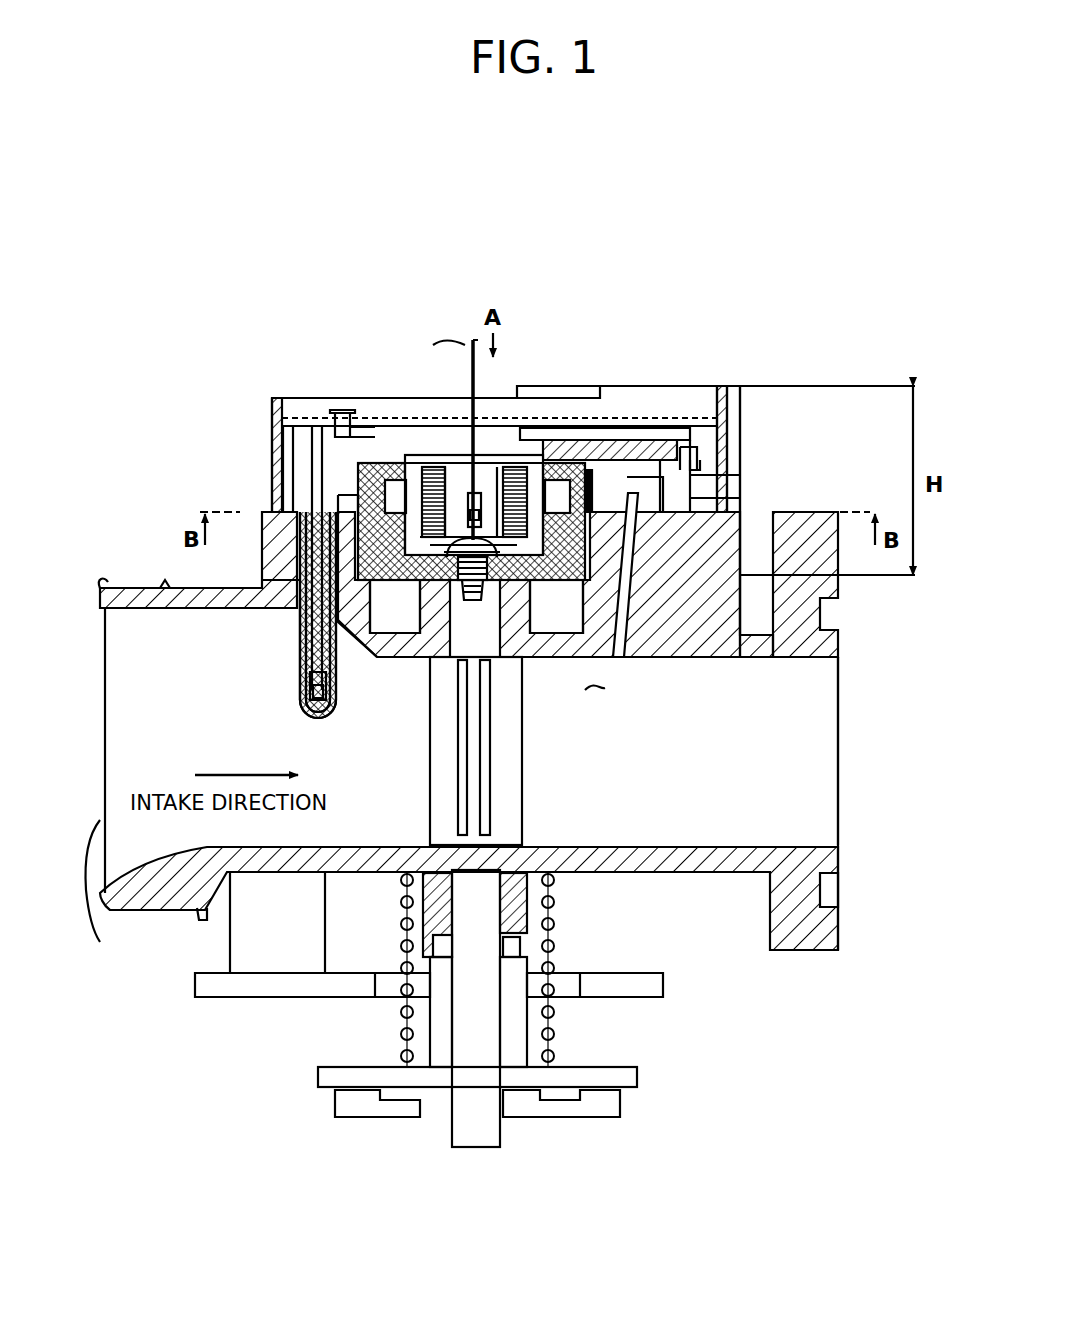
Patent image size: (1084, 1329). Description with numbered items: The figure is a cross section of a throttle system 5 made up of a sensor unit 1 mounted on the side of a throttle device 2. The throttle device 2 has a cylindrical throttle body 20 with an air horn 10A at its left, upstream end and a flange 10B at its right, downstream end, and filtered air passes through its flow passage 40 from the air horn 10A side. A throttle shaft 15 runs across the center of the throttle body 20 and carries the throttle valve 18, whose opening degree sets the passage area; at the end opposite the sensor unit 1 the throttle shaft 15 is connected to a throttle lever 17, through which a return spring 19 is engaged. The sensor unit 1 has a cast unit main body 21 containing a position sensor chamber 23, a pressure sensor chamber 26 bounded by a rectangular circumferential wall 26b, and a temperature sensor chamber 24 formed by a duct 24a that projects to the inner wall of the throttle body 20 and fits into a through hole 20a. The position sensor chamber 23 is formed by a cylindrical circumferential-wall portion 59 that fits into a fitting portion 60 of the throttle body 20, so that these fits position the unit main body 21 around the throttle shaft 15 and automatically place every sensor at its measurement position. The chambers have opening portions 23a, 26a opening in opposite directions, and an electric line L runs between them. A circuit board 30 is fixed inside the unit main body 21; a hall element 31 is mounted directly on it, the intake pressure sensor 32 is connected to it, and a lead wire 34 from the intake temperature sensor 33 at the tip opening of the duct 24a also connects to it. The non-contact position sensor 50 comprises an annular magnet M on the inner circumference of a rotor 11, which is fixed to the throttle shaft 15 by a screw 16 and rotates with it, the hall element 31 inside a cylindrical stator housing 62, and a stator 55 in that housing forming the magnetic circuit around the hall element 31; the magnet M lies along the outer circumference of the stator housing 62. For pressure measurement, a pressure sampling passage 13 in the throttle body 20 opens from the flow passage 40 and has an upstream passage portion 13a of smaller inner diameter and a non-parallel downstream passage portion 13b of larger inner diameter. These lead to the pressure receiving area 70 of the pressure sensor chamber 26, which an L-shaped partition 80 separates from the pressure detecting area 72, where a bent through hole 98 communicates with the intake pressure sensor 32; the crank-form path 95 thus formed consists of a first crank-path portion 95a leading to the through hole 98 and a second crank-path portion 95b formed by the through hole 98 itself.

The sensor unit 1 is at (690, 372).
The throttle device 2 is at (850, 512).
The intake air control device 5 is at (528, 263).
The air horn 10A is at (96, 935).
The flange 10B is at (838, 800).
The rotor 11 is at (395, 606).
The pressure sampling passage 13 is at (897, 702).
The upstream passage portion 13a is at (600, 657).
The downstream passage portion 13b is at (655, 657).
The throttle shaft 15 is at (483, 902).
The screw 16 is at (440, 662).
The throttle lever 17 is at (595, 1110).
The throttle valve 18 is at (482, 790).
The return spring 19 is at (400, 1012).
The throttle body 20 is at (686, 870).
The through hole 20a is at (295, 585).
The unit main body 21 is at (742, 440).
The position sensor chamber 23 is at (362, 482).
The opening portion 23a is at (378, 660).
The temperature sensor chamber 24 is at (298, 690).
The duct 24a is at (298, 622).
The pressure sensor chamber 26 is at (700, 395).
The opening portion 26a is at (585, 395).
The circumferential wall 26b is at (730, 402).
The circuit board 30 is at (465, 472).
The hall element 31 is at (440, 470).
The intake pressure sensor 32 is at (672, 440).
The intake temperature sensor 33 is at (312, 698).
The lead wire 34 is at (286, 428).
The flow passage 40 is at (688, 783).
The non-contact-type position sensor 50 is at (375, 478).
The stator 55 is at (532, 437).
The circumferential-wall portion 59 is at (340, 520).
The fitting portion 60 is at (468, 566).
The stator housing 62 is at (556, 606).
The pressure receiving area 70 is at (630, 495).
The pressure detecting area 72 is at (700, 488).
The partition 80 is at (700, 500).
The path 95 is at (825, 402).
The first crank-path portion 95a is at (702, 480).
The second crank-path portion 95b is at (700, 450).
The through hole 98 is at (645, 430).
The electric line L is at (605, 688).
The magnet M is at (292, 470).